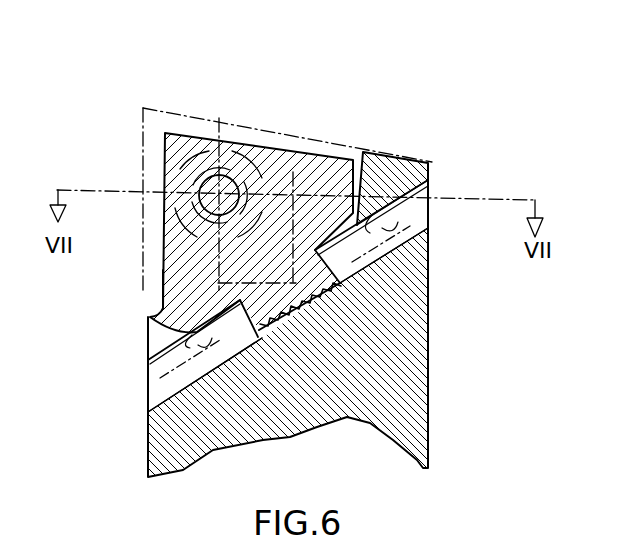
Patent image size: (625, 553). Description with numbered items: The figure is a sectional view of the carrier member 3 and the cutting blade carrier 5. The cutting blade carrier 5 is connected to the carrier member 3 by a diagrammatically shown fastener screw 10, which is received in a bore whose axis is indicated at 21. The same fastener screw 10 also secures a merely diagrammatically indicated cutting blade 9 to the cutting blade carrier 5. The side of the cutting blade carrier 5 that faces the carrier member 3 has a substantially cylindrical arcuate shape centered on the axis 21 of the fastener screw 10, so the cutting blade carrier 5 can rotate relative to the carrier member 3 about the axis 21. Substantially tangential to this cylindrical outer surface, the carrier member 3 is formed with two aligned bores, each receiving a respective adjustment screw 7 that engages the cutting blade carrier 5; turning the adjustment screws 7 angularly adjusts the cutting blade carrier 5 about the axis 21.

The carrier member 3 is at (395, 345).
The cutting blade carrier 5 is at (163, 292).
The adjustment screw 7 is at (185, 335).
The cutting blade 9 is at (153, 117).
The fastener screw 10 is at (237, 172).
The axis 21 is at (264, 134).